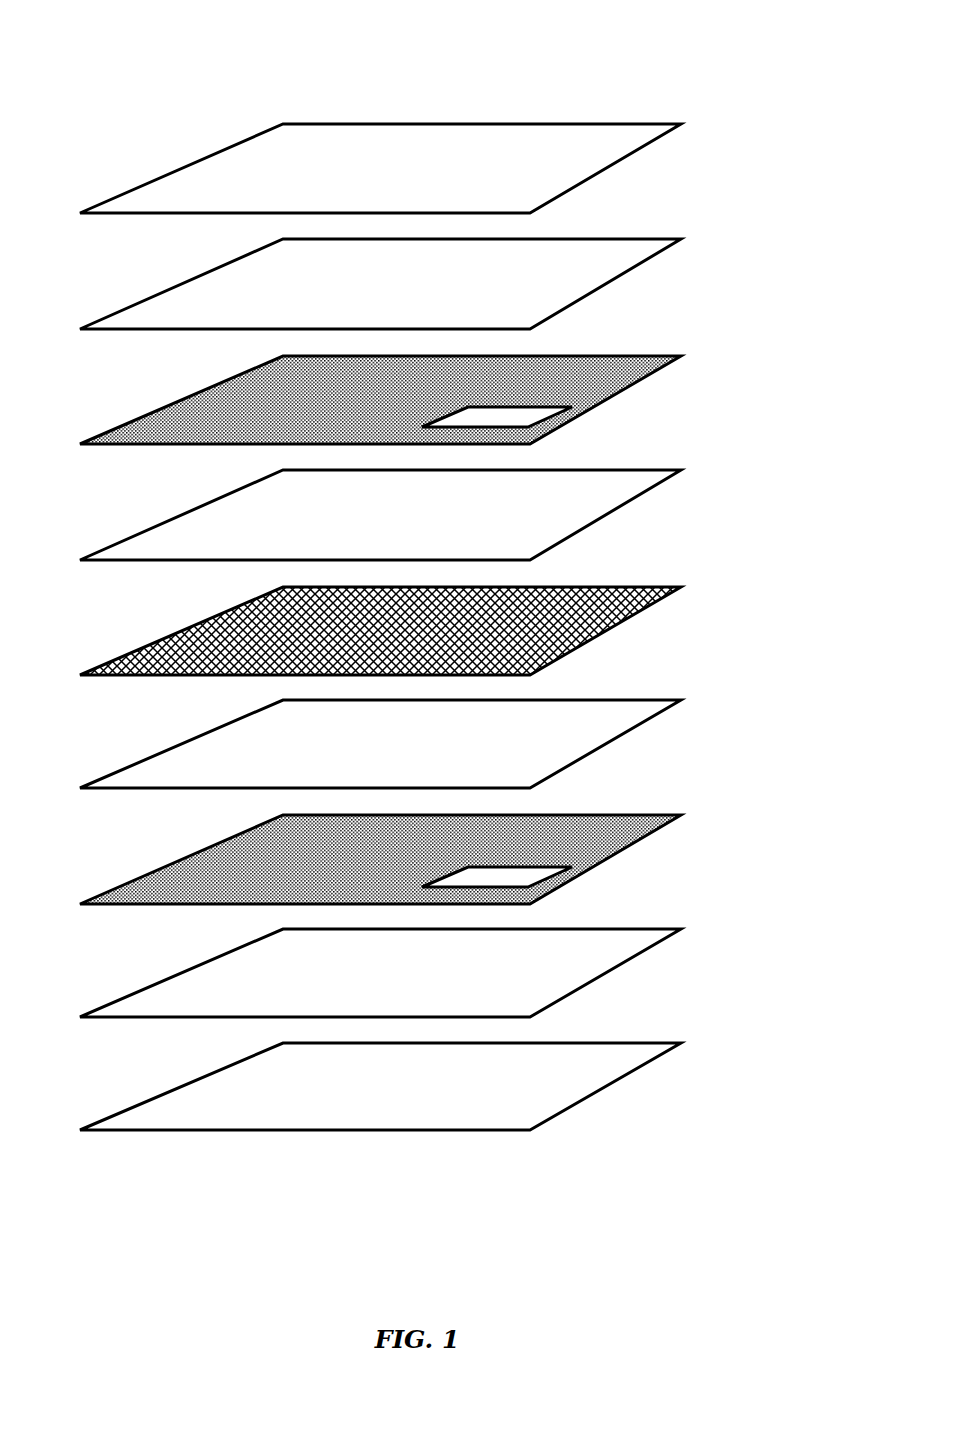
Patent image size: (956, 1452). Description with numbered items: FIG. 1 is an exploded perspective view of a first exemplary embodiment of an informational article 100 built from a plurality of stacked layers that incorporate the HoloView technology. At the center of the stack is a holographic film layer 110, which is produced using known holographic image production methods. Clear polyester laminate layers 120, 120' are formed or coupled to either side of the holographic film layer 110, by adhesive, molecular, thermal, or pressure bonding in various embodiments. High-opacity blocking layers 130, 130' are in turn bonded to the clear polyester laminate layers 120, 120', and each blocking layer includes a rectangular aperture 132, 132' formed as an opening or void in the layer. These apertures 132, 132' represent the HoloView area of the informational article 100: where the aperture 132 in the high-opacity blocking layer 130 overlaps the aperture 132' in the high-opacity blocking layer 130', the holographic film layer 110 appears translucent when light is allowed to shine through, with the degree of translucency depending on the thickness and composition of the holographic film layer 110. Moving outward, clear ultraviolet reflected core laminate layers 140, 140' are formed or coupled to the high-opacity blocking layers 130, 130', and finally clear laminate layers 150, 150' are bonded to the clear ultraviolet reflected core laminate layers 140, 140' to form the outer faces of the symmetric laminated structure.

The informational article 100 is at (160, 45).
The clear laminate layer 150 is at (437, 168).
The clear ultraviolet reflected core laminate layer 140 is at (435, 284).
The high-opacity blocking layer 130 is at (442, 400).
The rectangular aperture 132 is at (586, 433).
The clear polyester laminate layer 120 is at (438, 515).
The holographic film layer 110 is at (608, 633).
The clear polyester laminate layer 120' is at (434, 744).
The high-opacity blocking layer 130' is at (437, 859).
The rectangular aperture 132' is at (589, 893).
The clear ultraviolet reflected core laminate layer 140' is at (438, 973).
The clear laminate layer 150' is at (434, 1086).